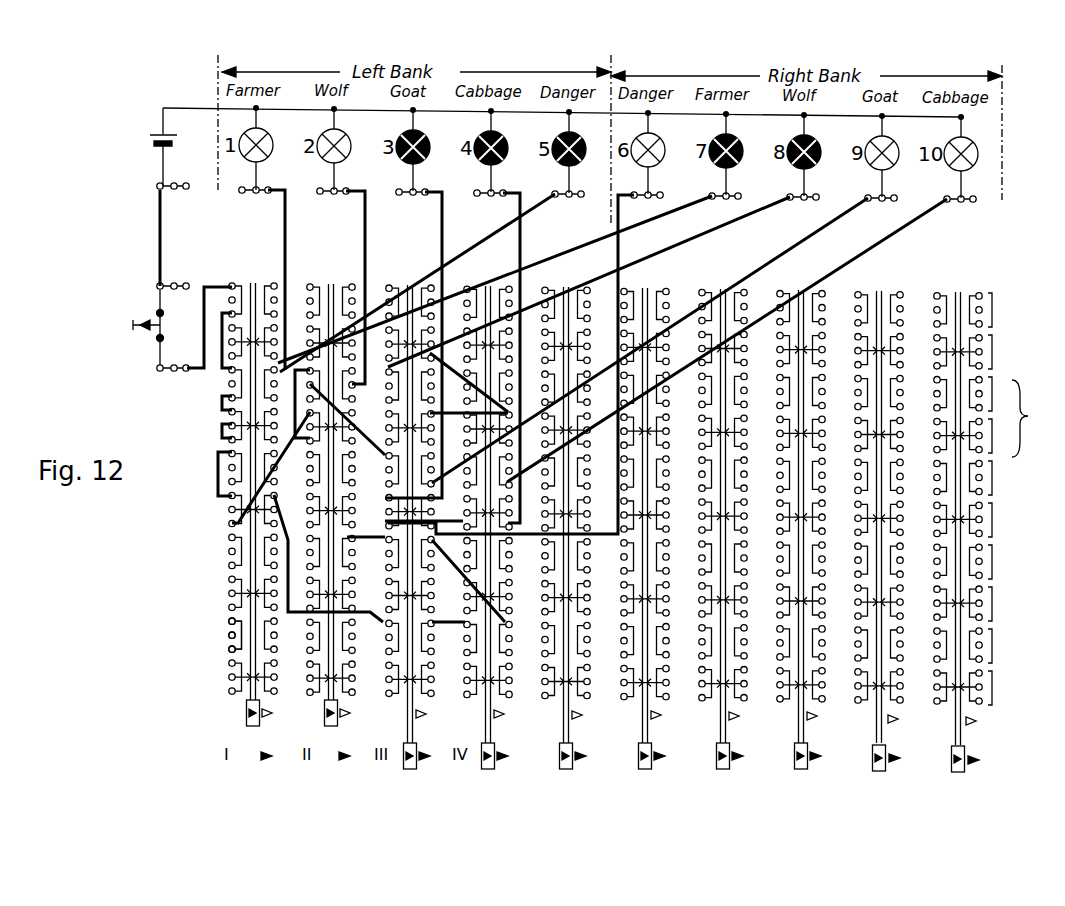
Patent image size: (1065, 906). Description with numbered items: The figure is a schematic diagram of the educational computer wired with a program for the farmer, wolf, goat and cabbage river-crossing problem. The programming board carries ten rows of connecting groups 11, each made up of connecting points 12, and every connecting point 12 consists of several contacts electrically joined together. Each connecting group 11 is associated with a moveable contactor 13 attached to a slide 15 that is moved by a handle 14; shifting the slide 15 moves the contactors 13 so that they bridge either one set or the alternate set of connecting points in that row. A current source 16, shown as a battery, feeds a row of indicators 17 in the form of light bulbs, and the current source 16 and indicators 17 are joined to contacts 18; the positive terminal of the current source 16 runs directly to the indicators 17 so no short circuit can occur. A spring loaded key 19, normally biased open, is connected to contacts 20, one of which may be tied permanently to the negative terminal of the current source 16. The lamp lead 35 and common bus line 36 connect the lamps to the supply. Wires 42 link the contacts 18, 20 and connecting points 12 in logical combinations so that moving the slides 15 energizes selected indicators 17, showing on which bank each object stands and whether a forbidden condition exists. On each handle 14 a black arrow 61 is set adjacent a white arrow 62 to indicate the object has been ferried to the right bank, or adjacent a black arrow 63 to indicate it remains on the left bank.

The connecting group 11 is at (1020, 499).
The connecting point 12 is at (997, 306).
The moveable contactor 13 is at (240, 628).
The handle 14 is at (246, 722).
The slide 15 is at (250, 566).
The current source 16 is at (152, 142).
The indicator 17 is at (268, 138).
The contact 18 is at (248, 198).
The spring loaded key 19 is at (155, 336).
The contact 20 is at (180, 282).
The lamp lead 35 is at (258, 172).
The common bus line 36 is at (196, 108).
The wire 42 is at (815, 222).
The black arrow 61 is at (247, 710).
The white arrow 62 is at (274, 714).
The black arrow 63 is at (265, 752).